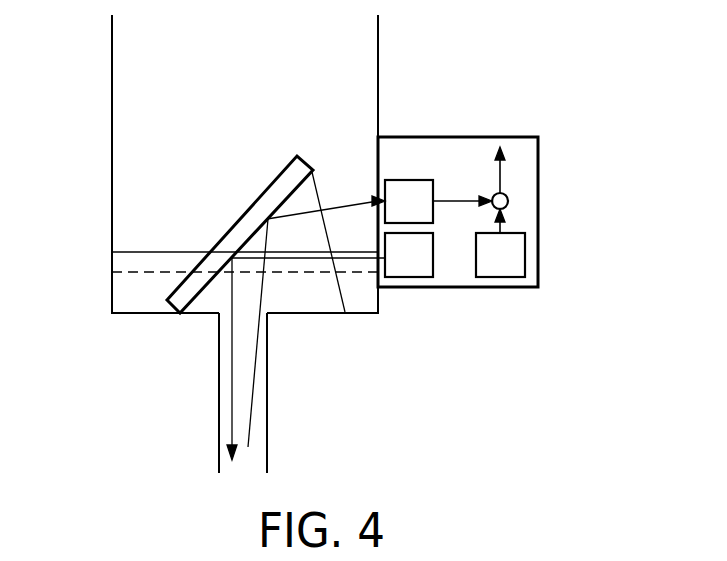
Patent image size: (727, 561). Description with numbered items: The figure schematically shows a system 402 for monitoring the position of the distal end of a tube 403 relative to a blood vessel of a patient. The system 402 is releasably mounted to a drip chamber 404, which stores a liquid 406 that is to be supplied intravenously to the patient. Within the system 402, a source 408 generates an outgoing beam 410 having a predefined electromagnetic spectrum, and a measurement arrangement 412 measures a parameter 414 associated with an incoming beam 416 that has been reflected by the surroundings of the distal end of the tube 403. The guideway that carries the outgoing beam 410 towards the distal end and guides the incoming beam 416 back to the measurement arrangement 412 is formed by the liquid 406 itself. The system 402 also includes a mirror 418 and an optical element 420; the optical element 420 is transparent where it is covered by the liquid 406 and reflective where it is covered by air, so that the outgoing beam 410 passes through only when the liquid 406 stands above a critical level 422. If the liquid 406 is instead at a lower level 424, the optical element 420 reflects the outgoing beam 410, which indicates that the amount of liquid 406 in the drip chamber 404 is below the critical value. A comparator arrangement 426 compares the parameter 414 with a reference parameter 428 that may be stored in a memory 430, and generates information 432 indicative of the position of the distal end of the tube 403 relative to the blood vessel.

The system 402 is at (507, 45).
The tube 403 is at (268, 353).
The drip chamber 404 is at (111, 145).
The liquid 406 is at (318, 302).
The source 408 is at (427, 268).
The outgoing beam 410 is at (232, 398).
The measurement arrangement 412 is at (427, 214).
The parameter 414 is at (457, 197).
The incoming beam 416 is at (250, 416).
The mirror 418 is at (282, 172).
The optical element 420 is at (322, 190).
The critical level 422 is at (160, 252).
The level 424 is at (135, 273).
The comparator arrangement 426 is at (508, 201).
The reference parameter 428 is at (502, 229).
The memory 430 is at (518, 268).
The information 432 is at (505, 173).